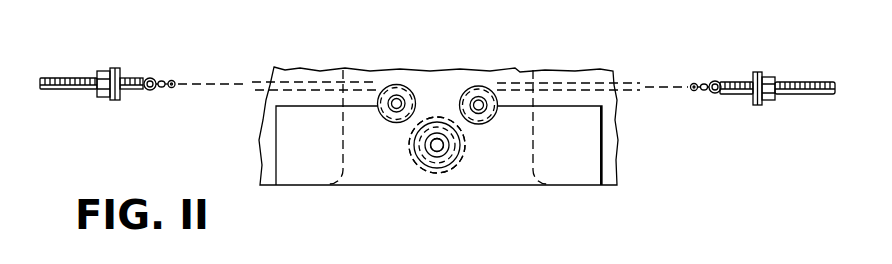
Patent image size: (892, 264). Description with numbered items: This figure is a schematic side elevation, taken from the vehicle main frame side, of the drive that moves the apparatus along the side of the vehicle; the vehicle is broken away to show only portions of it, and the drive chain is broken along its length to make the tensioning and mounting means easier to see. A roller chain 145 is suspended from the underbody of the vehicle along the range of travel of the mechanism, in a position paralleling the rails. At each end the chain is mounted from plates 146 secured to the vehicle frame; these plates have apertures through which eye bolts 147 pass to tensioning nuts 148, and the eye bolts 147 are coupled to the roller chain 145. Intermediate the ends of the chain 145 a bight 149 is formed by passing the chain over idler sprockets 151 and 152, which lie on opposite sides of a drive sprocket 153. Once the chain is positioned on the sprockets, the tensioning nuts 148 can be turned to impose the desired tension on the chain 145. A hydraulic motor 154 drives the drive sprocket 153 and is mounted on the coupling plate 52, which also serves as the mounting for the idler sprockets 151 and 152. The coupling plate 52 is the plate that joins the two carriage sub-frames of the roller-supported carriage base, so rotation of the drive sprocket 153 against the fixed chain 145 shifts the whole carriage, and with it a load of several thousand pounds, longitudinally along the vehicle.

The coupling plate 52 is at (355, 173).
The roller chain 145 is at (166, 80).
The plates 146 is at (115, 100).
The eye bolts 147 is at (62, 90).
The tensioning nuts 148 is at (104, 71).
The bight 149 is at (412, 162).
The idler sprocket 151 is at (380, 94).
The idler sprocket 152 is at (496, 106).
The drive sprocket 153 is at (437, 117).
The hydraulic motor 154 is at (458, 168).